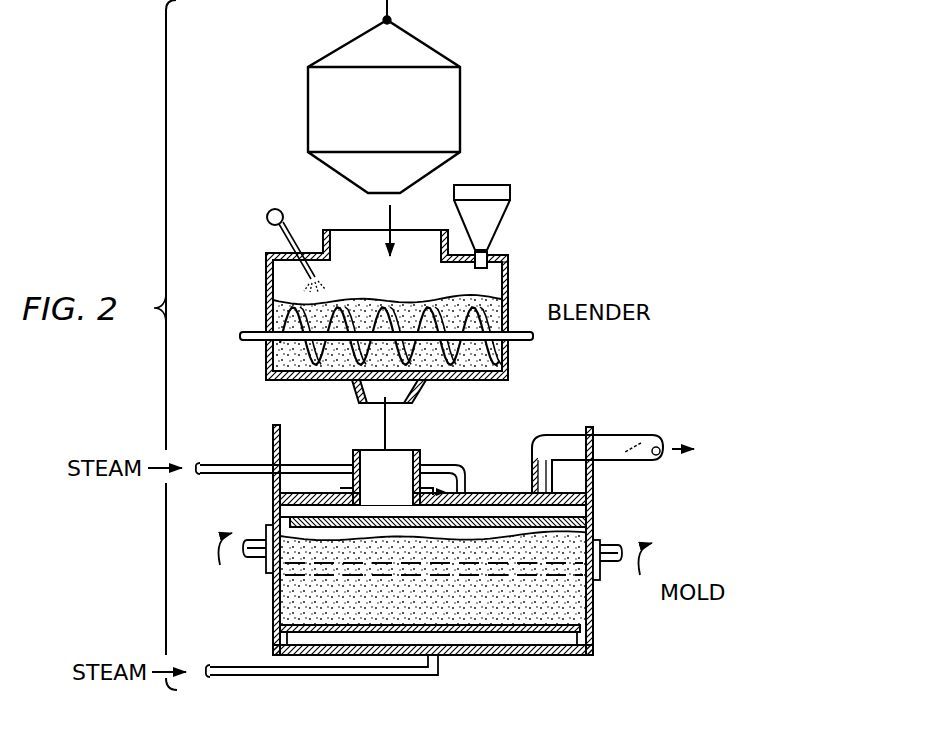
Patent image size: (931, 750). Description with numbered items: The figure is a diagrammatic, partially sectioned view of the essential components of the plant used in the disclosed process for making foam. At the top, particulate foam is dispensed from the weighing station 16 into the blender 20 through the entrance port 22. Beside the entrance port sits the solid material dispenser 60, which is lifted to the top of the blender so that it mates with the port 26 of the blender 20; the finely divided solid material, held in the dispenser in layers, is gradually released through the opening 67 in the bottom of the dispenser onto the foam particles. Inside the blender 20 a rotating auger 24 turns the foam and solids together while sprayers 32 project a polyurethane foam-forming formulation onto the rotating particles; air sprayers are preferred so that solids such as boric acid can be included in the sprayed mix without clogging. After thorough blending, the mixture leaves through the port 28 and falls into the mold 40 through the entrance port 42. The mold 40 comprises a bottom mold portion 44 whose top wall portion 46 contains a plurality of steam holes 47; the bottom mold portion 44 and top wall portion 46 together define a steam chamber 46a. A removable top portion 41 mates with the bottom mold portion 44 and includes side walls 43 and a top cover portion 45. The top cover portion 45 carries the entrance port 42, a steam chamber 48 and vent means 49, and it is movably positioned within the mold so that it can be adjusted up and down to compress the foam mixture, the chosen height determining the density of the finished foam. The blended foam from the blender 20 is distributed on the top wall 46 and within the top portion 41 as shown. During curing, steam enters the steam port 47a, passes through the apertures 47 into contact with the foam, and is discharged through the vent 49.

The weighing station 16 is at (462, 105).
The blender 20 is at (264, 280).
The entrance port 22 is at (362, 238).
The rotating auger 24 is at (508, 345).
The port 26 is at (510, 262).
The port 28 is at (368, 392).
The sprayers 32 is at (265, 218).
The mold 40 is at (435, 542).
The top portion 41 is at (272, 608).
The entrance port 42 is at (406, 458).
The side walls 43 is at (594, 596).
The bottom mold portion 44 is at (551, 656).
The top cover portion 45 is at (485, 493).
The top wall portion 46 is at (540, 625).
The steam chamber 46a is at (517, 637).
The steam holes 47 is at (452, 624).
The steam port 47a is at (240, 667).
The steam chamber 48 is at (506, 511).
The vent means 49 is at (633, 433).
The solid material dispenser 60 is at (500, 193).
The opening 67 is at (489, 250).